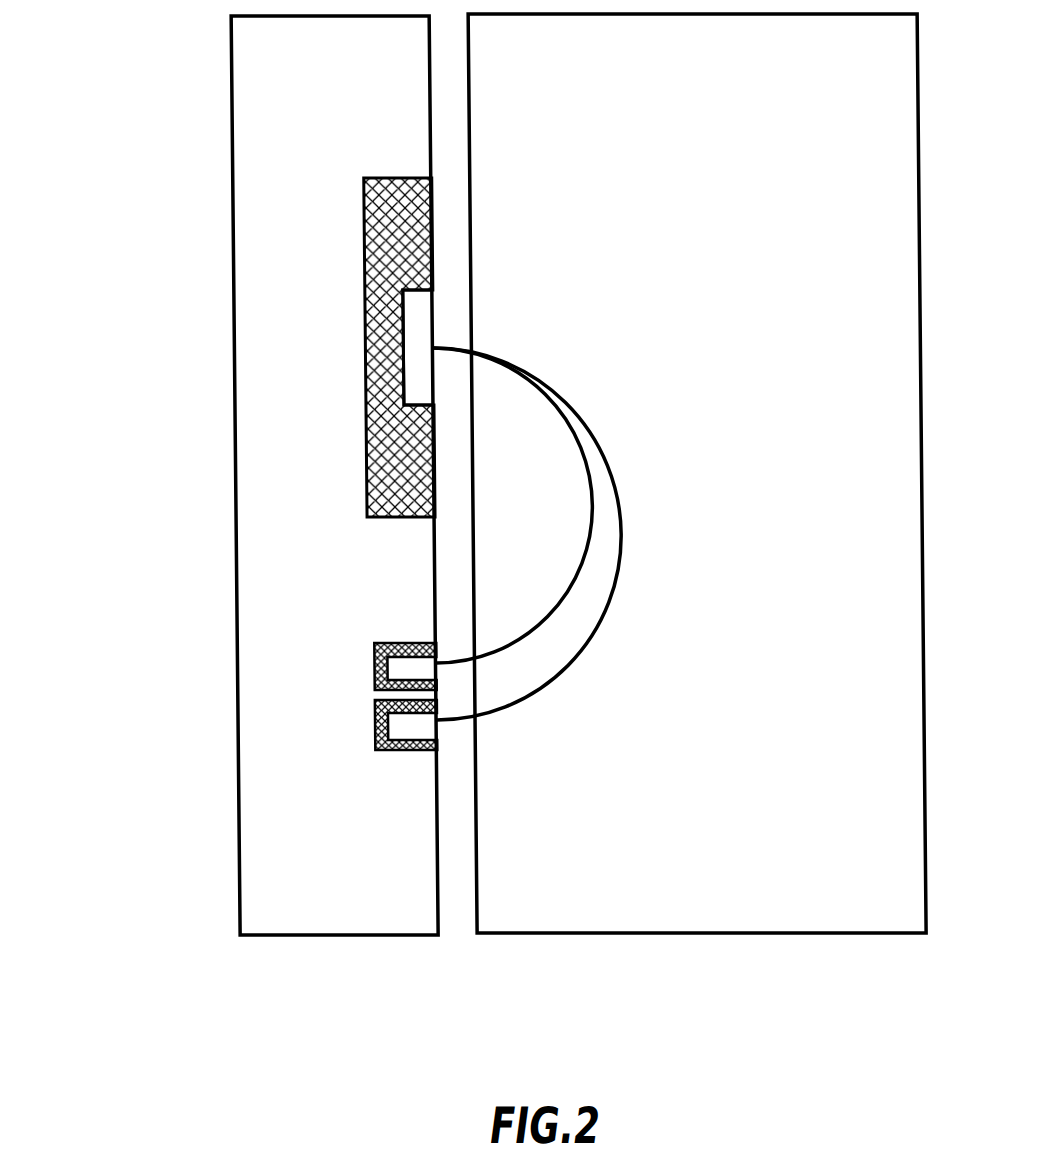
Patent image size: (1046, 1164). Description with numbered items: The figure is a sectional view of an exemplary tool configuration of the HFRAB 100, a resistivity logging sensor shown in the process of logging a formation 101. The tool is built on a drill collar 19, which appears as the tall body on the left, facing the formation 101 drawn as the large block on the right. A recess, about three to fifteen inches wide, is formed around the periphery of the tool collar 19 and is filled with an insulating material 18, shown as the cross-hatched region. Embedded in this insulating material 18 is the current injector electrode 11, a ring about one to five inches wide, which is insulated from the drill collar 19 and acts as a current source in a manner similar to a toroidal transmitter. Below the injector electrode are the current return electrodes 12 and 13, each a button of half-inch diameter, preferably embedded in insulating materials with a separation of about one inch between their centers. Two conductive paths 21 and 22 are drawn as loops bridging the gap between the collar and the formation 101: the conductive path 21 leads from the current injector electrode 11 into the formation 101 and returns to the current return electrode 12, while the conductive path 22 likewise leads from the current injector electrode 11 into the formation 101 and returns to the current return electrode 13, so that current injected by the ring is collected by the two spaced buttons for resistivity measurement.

The HFRAB 100 is at (196, 117).
The drill collar 19 is at (348, 101).
The formation 101 is at (826, 805).
The insulating material 18 is at (375, 490).
The current injector electrode 11 is at (409, 337).
The current return electrode 12 is at (393, 665).
The current return electrode 13 is at (393, 720).
The conductive path 21 is at (574, 428).
The conductive path 22 is at (615, 497).